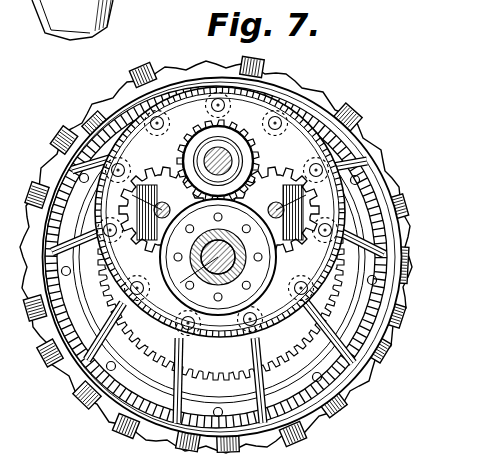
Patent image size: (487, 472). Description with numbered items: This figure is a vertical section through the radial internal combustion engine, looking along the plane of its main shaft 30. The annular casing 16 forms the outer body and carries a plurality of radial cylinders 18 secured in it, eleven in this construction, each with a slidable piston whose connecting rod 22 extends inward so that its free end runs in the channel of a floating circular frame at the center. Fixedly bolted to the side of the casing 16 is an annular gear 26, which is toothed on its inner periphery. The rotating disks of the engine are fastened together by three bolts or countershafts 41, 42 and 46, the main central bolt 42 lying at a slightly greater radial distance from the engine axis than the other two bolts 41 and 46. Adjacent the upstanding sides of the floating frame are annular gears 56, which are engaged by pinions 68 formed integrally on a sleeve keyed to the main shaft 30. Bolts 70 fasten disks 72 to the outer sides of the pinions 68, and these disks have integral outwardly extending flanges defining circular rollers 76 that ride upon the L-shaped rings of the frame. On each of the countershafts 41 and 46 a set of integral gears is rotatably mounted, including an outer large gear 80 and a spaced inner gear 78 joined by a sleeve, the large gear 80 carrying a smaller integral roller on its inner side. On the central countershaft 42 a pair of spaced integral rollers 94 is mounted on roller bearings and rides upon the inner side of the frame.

The casing 16 is at (278, 85).
The radial cylinders 18 is at (350, 393).
The connecting rod 22 is at (96, 318).
The annular gear 26 is at (221, 257).
The main shaft 30 is at (125, 398).
The bolt or countershaft 41 is at (284, 190).
The main central bolt or pin 42 is at (262, 80).
The bolt or countershaft 46 is at (112, 157).
The annular gears 56 is at (293, 152).
The pinions 68 is at (219, 257).
The bolts 70 is at (308, 205).
The disks 72 is at (266, 200).
The circular rollers 76 is at (227, 150).
The inner gear 78 is at (133, 207).
The outer large gear 80 is at (125, 132).
The spaced integral rollers 94 is at (197, 143).